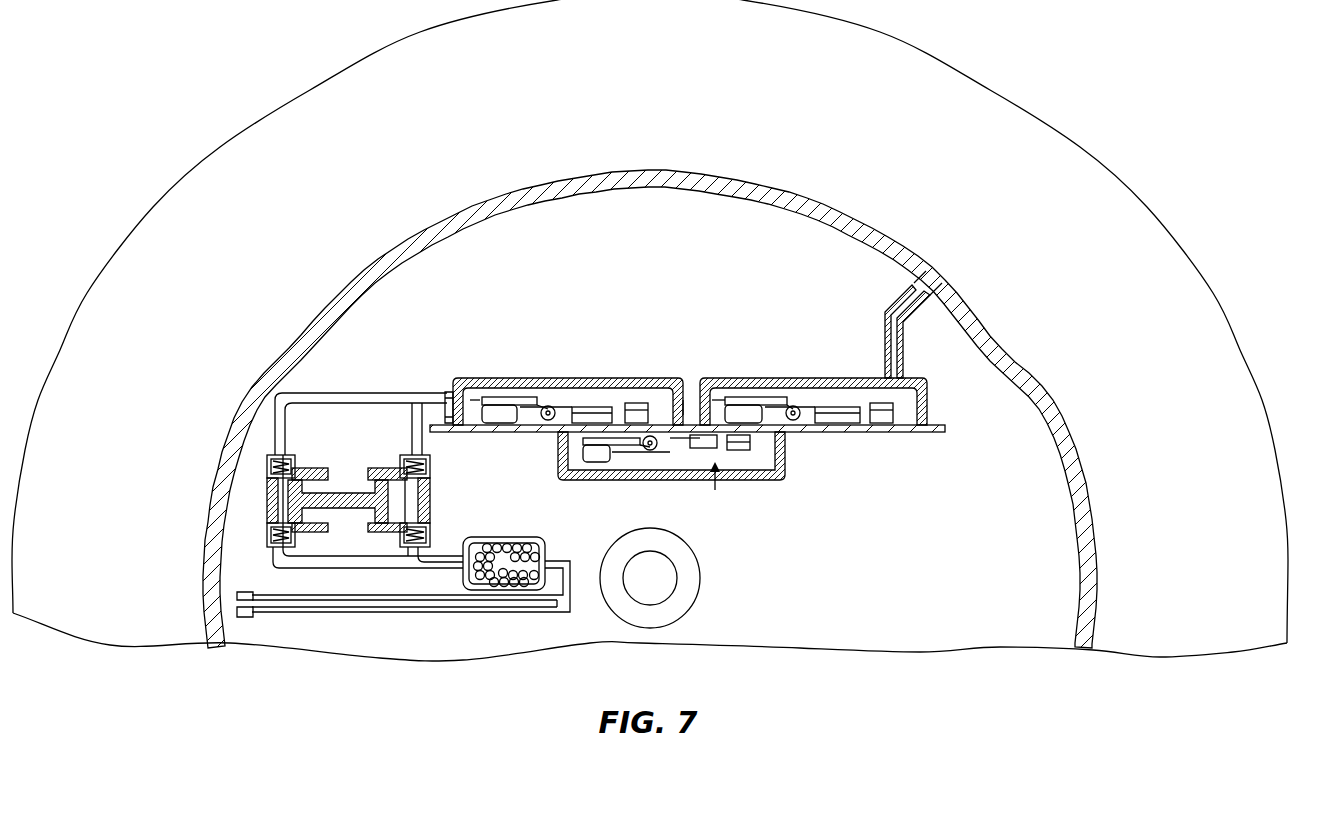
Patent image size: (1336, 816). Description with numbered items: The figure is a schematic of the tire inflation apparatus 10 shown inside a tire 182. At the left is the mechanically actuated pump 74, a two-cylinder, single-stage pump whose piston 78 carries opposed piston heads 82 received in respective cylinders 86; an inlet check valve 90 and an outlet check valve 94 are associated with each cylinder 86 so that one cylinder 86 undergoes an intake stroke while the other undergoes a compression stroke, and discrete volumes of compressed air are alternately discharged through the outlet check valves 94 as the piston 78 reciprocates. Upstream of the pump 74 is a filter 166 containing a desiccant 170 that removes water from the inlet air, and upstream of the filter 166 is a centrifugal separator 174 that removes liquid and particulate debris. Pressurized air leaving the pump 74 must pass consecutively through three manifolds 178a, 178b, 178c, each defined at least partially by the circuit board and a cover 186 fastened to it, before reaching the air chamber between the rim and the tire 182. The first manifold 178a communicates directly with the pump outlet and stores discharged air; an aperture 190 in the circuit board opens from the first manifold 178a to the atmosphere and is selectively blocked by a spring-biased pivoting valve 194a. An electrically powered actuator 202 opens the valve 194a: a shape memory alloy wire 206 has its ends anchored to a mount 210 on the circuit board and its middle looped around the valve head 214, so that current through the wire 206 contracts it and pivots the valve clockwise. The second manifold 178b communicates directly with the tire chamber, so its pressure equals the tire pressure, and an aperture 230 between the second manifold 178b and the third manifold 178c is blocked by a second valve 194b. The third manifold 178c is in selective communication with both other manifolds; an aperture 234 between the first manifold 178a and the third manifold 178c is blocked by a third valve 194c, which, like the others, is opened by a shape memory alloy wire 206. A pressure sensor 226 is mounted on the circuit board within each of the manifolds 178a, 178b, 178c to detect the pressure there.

The tire inflation apparatus 10 is at (812, 586).
The pump 74 is at (258, 511).
The piston 78 is at (344, 500).
The piston heads 82 is at (302, 515).
The cylinders 86 is at (307, 480).
The inlet check valve 90 is at (268, 537).
The outlet check valve 94 is at (268, 468).
The filter 166 is at (560, 549).
The desiccant 170 is at (508, 565).
The centrifugal separator 174 is at (562, 602).
The first manifold 178a is at (678, 380).
The second manifold 178b is at (925, 411).
The third manifold 178c is at (770, 480).
The tire 182 is at (1073, 177).
The cover 186 is at (486, 396).
The aperture 190 is at (517, 433).
The valve 194a is at (505, 422).
The valve 194b is at (782, 398).
The valve 194c is at (610, 480).
The electrically powered actuator 202 is at (522, 397).
The shape memory alloy wire 206 is at (525, 393).
The mount 210 is at (636, 403).
The valve head 214 is at (470, 378).
The pressure sensor 226 is at (551, 406).
The aperture 230 is at (752, 445).
The aperture 234 is at (592, 407).